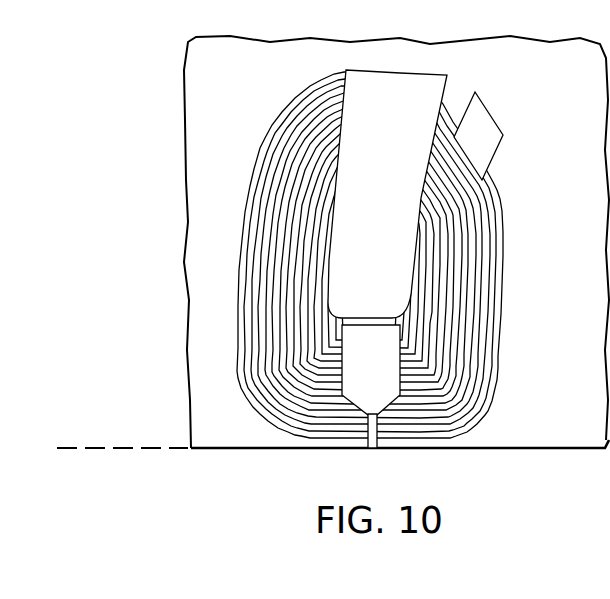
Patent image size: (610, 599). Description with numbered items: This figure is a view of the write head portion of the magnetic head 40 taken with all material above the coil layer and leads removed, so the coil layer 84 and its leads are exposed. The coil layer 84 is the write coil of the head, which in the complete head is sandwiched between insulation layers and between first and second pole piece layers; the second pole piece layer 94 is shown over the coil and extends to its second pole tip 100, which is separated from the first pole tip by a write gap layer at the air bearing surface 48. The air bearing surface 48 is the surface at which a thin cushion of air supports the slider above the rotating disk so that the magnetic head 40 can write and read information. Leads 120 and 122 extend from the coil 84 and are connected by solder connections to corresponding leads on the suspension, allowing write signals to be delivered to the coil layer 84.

The magnetic head 40 is at (517, 226).
The air bearing surface 48 is at (122, 447).
The coil layer 84 is at (482, 327).
The second pole piece layer 94 is at (386, 376).
The second pole tip 100 is at (372, 449).
The lead 120 is at (398, 190).
The lead 122 is at (485, 111).